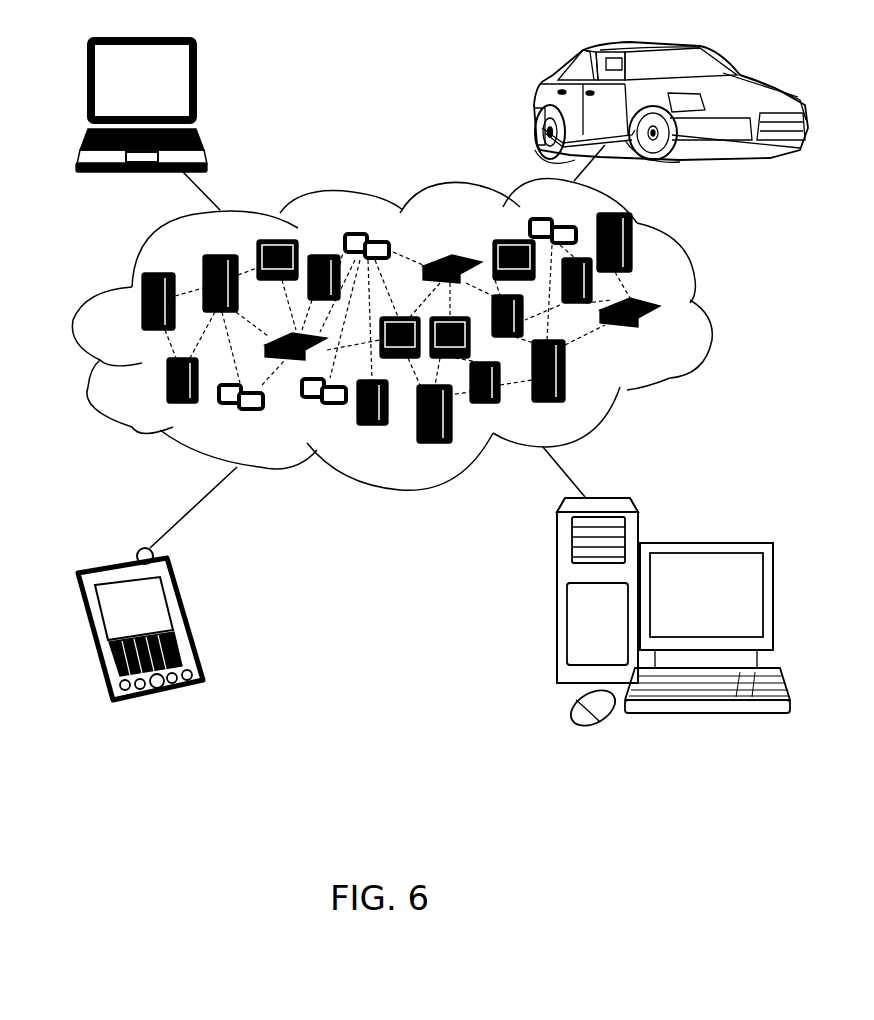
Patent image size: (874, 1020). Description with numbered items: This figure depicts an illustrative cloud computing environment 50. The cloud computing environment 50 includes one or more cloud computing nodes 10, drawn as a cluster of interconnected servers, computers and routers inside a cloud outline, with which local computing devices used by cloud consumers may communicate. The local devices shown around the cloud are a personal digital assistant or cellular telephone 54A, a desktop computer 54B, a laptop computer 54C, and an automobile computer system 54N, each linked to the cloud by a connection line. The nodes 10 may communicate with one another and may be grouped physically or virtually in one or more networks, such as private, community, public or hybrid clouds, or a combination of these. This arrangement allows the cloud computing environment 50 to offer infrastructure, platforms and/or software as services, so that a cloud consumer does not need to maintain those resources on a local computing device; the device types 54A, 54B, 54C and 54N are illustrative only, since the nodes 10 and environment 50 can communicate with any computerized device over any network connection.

The cloud computing environment 50 is at (712, 308).
The cloud computing nodes 10 is at (662, 336).
The personal digital assistant (PDA) or cellular telephone 54A is at (185, 617).
The desktop computer 54B is at (705, 543).
The laptop computer 54C is at (198, 90).
The automobile computer system 54N is at (535, 103).